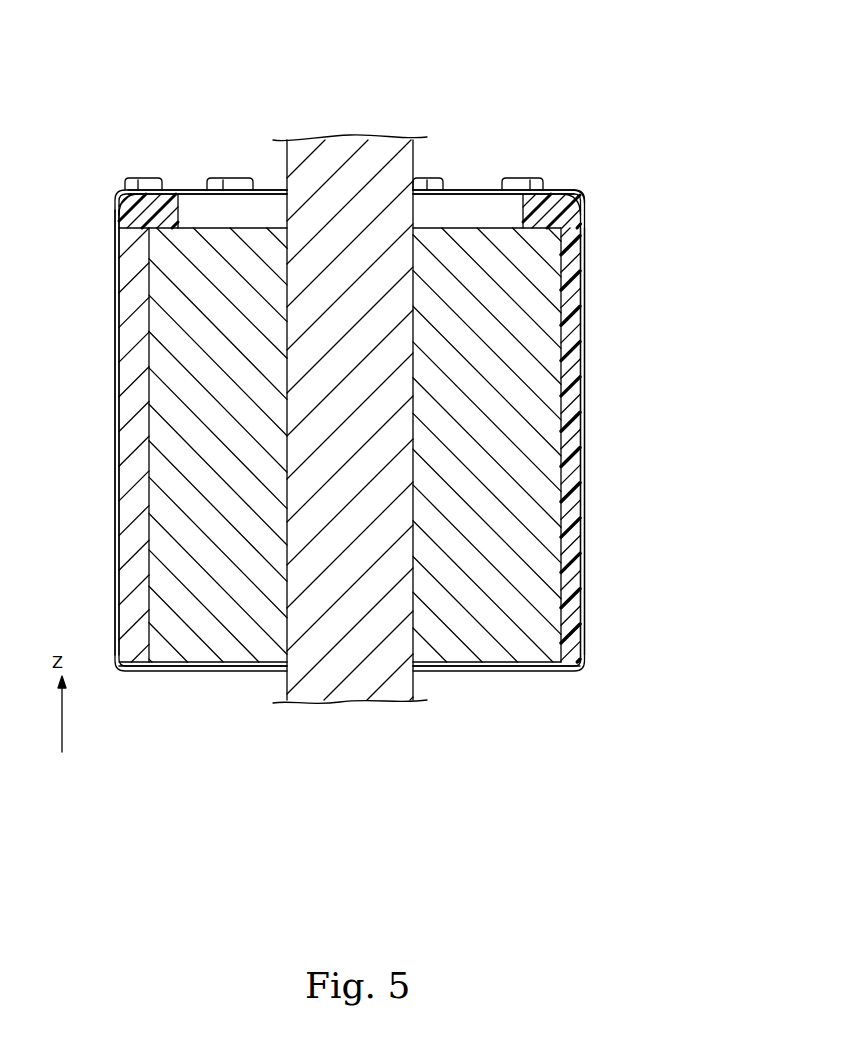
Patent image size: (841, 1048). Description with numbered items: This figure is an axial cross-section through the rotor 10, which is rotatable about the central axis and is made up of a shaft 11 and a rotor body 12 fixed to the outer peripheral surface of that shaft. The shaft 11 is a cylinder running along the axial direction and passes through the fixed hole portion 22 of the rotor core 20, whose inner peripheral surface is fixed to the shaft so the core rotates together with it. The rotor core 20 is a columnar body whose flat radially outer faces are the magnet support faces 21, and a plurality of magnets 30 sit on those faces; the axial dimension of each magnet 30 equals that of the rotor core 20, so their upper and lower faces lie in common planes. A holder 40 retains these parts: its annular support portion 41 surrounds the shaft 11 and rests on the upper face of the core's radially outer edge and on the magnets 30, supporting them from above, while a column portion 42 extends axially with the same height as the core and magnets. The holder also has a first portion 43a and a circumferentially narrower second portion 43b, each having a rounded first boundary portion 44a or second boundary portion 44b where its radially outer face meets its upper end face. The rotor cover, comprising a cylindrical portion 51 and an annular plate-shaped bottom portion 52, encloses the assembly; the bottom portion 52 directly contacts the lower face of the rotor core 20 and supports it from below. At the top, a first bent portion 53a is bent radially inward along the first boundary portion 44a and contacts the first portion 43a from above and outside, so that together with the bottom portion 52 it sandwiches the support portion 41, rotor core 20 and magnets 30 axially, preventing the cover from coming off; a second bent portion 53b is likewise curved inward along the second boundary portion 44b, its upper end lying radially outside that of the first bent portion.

The rotor 10 is at (537, 64).
The shaft 11 is at (403, 163).
The rotor body 12 is at (525, 154).
The rotor core 20 is at (476, 630).
The magnet support face 21 is at (115, 580).
The fixed hole portion 22 is at (288, 622).
The magnet 30 is at (127, 493).
The holder 40 is at (648, 505).
The support portion 41 is at (540, 236).
The column portion 42 is at (572, 612).
The first portion 43a is at (122, 215).
The second portion 43b is at (233, 180).
The first boundary portion 44a is at (119, 203).
The second boundary portion 44b is at (573, 184).
The cylindrical portion 51 is at (115, 415).
The bottom portion 52 is at (153, 668).
The first bent portion 53a is at (140, 180).
The second bent portion 53b is at (583, 188).